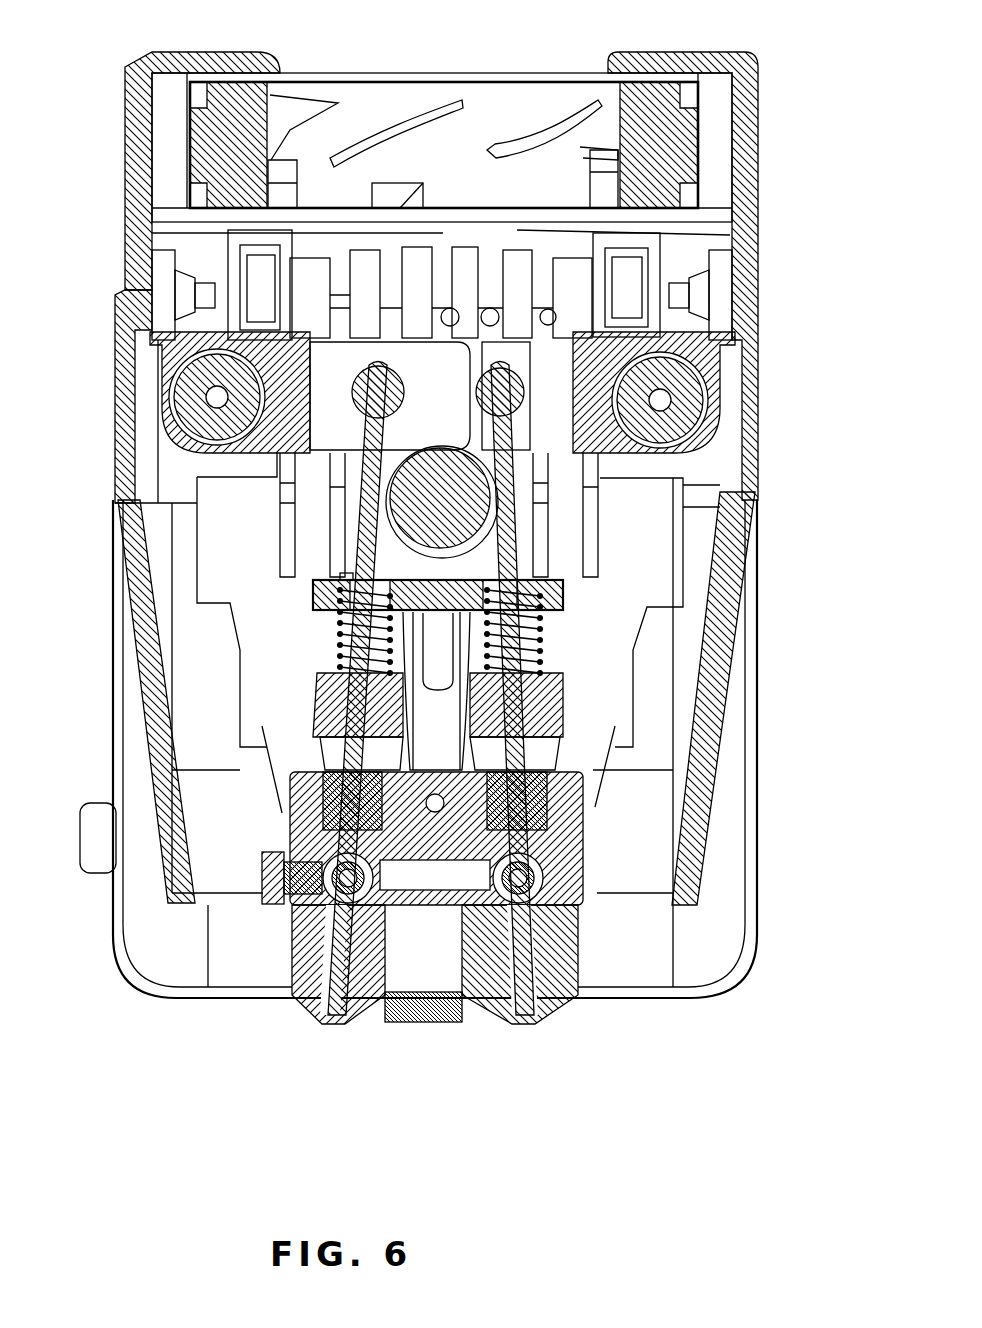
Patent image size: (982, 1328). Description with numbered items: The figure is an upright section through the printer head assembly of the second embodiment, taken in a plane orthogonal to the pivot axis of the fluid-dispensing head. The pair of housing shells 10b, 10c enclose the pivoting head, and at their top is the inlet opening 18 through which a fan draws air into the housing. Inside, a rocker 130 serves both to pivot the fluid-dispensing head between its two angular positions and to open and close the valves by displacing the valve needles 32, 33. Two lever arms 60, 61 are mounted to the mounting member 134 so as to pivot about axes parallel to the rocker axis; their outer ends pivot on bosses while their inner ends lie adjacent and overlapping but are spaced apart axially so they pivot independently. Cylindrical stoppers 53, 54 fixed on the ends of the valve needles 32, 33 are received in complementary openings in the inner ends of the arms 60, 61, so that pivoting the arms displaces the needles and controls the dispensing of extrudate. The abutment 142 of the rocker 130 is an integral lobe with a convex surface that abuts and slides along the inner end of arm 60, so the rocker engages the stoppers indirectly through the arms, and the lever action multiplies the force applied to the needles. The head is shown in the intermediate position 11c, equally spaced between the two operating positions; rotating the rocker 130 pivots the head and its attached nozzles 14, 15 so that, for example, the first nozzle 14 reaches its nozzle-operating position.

The inlet opening 18 is at (367, 152).
The cylindrical stopper 53 is at (388, 403).
The cylindrical stopper 54 is at (483, 383).
The lever arm 60 is at (340, 430).
The lever arm 61 is at (553, 443).
The abutment 142 is at (383, 523).
The rocker 130 is at (480, 513).
The valve needle 33 is at (563, 597).
The valve needle 32 is at (340, 617).
The mounting member 134 is at (285, 672).
The housing shell 10b is at (165, 743).
The housing shell 10c is at (717, 723).
The intermediate position 11c is at (168, 1033).
The first nozzle 14 is at (333, 1050).
The second nozzle 15 is at (522, 1050).